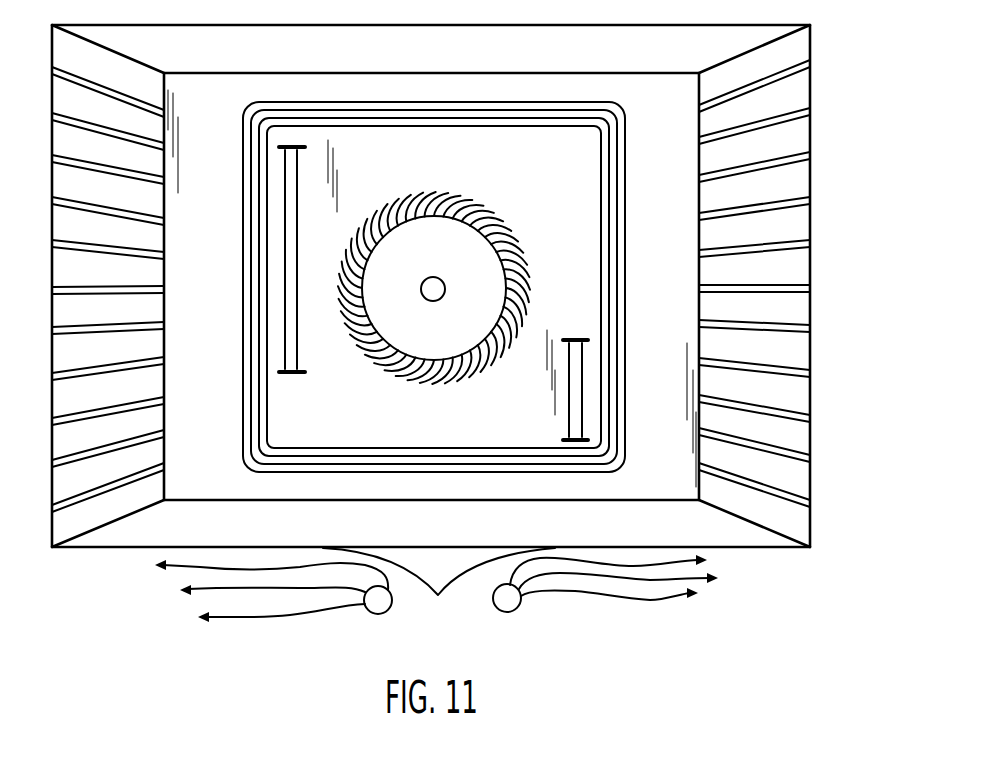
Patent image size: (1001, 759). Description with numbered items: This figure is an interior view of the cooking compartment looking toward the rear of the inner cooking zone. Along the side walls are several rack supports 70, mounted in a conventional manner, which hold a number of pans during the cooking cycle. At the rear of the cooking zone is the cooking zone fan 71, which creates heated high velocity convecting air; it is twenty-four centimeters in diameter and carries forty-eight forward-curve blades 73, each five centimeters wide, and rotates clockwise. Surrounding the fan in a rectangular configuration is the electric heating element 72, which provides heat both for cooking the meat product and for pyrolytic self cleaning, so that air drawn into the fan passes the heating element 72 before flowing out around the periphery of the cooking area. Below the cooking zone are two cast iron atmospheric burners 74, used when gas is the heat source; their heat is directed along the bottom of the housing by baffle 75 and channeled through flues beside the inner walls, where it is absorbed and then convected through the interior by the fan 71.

The rack supports 70 is at (755, 284).
The cooking zone fan 71 is at (482, 270).
The electric heating element 72 is at (533, 128).
The blades 73 is at (508, 350).
The atmospheric burners 74 is at (567, 618).
The baffle 75 is at (452, 580).